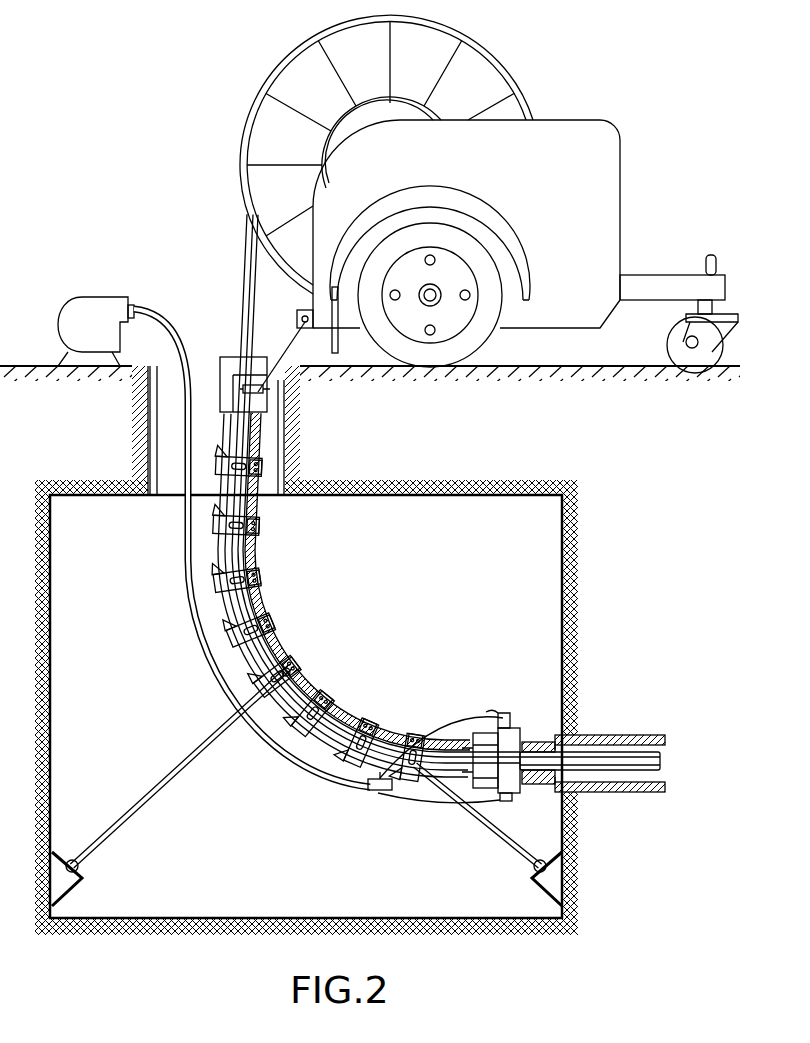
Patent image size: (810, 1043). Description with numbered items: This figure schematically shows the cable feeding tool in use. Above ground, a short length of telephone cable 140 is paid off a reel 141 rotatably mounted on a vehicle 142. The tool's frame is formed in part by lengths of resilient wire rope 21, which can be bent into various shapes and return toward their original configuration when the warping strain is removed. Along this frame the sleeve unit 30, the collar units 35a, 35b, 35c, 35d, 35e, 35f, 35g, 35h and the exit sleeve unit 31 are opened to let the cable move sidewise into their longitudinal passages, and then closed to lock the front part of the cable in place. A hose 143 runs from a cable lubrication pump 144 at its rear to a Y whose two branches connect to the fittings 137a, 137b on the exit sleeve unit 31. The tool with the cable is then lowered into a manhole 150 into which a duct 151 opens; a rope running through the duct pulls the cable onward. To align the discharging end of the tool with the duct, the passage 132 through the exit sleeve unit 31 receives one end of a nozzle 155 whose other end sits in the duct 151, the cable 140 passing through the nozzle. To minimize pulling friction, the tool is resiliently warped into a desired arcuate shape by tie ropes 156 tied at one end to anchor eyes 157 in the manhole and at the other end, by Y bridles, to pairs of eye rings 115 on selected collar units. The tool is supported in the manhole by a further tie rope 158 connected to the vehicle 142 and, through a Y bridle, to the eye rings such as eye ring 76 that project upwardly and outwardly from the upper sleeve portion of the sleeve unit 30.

The reel 141 is at (303, 60).
The vehicle 142 is at (612, 144).
The cable lubrication pump 144 is at (72, 318).
The telephone cable 140 is at (249, 279).
The further tie rope 158 is at (292, 345).
The sleeve unit 30 is at (232, 352).
The eye ring 76 is at (268, 392).
The collar unit 35a is at (263, 470).
The collar unit 35b is at (262, 530).
The collar unit 35c is at (264, 580).
The collar unit 35d is at (276, 628).
The collar unit 35e is at (300, 675).
The collar unit 35f is at (330, 704).
The collar unit 35g is at (378, 735).
The collar unit 35h is at (422, 735).
The wire rope lengths 21 is at (262, 605).
The eye rings 115 is at (384, 791).
The hose 143 is at (207, 622).
The manhole 150 is at (482, 594).
The fitting 137a is at (504, 713).
The fitting 137b is at (510, 801).
The exit sleeve unit 31 is at (515, 732).
The passage 132 is at (540, 742).
The nozzle 155 is at (595, 738).
The duct 151 is at (660, 735).
The tie ropes 156 is at (180, 766).
The anchor eyes 157 is at (80, 868).